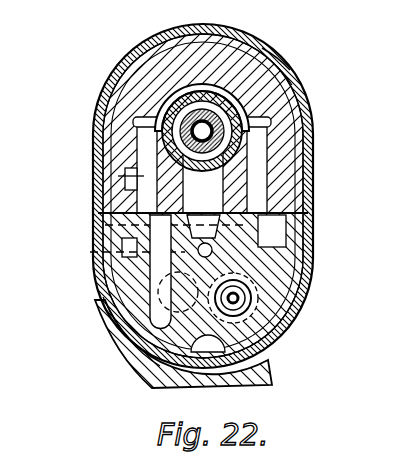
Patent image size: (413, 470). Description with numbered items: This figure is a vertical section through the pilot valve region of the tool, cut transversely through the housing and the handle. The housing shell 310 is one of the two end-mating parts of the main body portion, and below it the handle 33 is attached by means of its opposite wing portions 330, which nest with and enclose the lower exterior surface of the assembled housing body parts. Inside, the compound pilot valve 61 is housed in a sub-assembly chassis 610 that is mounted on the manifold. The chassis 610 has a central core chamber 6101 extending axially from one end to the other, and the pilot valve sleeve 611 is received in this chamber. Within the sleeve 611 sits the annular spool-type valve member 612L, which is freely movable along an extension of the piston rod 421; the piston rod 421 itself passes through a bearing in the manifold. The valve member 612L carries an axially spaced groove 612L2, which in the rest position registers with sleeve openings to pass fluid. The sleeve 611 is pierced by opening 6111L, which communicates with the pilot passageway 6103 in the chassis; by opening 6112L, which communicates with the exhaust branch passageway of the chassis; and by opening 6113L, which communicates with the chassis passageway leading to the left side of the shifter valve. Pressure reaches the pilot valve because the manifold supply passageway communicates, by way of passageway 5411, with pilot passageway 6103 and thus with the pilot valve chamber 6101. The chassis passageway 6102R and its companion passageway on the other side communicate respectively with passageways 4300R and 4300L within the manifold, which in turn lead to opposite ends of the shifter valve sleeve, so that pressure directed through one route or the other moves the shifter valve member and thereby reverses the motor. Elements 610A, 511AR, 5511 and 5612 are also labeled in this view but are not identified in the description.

The handle 33 is at (122, 356).
The wing portions 330 is at (103, 323).
The body part (shell) 310 is at (113, 73).
The pilot valve (compound valve) 61 is at (287, 108).
The sub-assembly chassis 610 is at (157, 70).
The bearing flange 610A is at (130, 132).
The valve sleeve 611 is at (190, 95).
The core chamber 6101 is at (220, 82).
The spool-type valve member 612L is at (278, 70).
The groove of valve member 612L2 is at (157, 112).
The sleeve opening 6112L is at (115, 121).
The sleeve opening 6111L is at (290, 122).
The pilot passageway 6103 is at (295, 135).
The chassis passageway 6102R is at (125, 180).
The sleeve opening 6113L is at (292, 178).
The piston rod 421 is at (282, 92).
The manifold passageway 4300L is at (105, 224).
The manifold passageway 4300R is at (90, 252).
The right guide bore 511AR is at (102, 265).
The slot 5511 is at (100, 288).
The passageway 5411 is at (305, 213).
The lower bearing 5612 is at (250, 294).